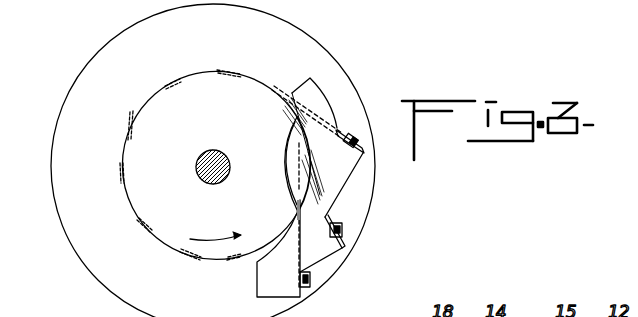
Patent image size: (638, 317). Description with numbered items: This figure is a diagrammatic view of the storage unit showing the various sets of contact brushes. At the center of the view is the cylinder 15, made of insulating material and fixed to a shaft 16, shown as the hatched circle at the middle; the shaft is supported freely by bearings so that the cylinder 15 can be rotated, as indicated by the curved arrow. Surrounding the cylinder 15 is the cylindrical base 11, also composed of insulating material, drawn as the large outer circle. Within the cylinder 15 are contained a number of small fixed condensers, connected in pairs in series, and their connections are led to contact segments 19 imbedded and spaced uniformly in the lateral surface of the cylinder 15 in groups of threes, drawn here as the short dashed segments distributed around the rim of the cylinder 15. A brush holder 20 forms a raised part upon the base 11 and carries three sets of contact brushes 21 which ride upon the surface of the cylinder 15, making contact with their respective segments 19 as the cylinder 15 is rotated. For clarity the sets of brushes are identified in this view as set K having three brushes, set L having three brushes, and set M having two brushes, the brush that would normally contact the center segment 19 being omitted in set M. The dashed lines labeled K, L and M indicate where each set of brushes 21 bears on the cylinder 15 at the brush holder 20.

The cylindrical base 11 is at (298, 34).
The cylinder 15 is at (121, 144).
The shaft 16 is at (201, 160).
The contact segments 19 is at (138, 121).
The brush holder 20 is at (333, 181).
The contact brushes 21 is at (303, 175).
The brush set M is at (337, 130).
The brush set L is at (327, 203).
The brush set K is at (297, 248).